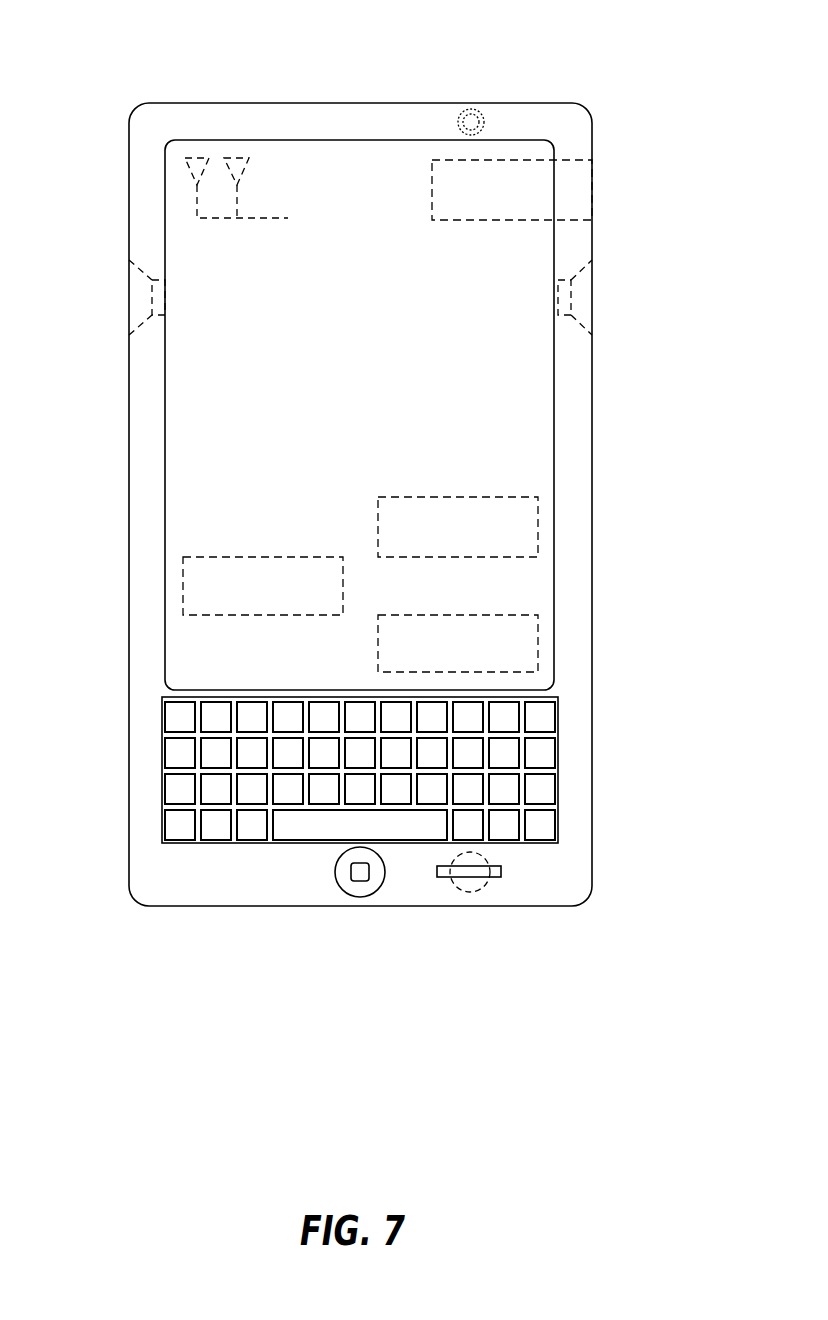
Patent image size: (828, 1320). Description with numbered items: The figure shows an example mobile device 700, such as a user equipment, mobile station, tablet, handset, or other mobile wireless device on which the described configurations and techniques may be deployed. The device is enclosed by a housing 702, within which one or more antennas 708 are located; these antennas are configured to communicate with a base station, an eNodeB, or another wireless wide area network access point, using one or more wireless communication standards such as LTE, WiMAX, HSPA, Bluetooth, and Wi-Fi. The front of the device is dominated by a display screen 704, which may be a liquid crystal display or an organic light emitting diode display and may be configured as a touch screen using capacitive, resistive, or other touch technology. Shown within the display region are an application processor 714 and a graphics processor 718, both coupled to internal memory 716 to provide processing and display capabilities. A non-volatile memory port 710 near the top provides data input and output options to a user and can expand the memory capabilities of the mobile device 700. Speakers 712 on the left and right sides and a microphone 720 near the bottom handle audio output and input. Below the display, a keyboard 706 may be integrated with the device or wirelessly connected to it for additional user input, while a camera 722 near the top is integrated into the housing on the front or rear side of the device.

The mobile device 700 is at (584, 36).
The housing 702 is at (360, 103).
The display screen 704 is at (533, 405).
The keyboard 706 is at (560, 770).
The antennas 708 is at (238, 158).
The non-volatile memory port 710 is at (593, 190).
The speakers 712 is at (140, 299).
The application processor 714 is at (458, 496).
The internal memory 716 is at (458, 614).
The graphics processor 718 is at (262, 556).
The microphone 720 is at (472, 892).
The camera 722 is at (480, 112).